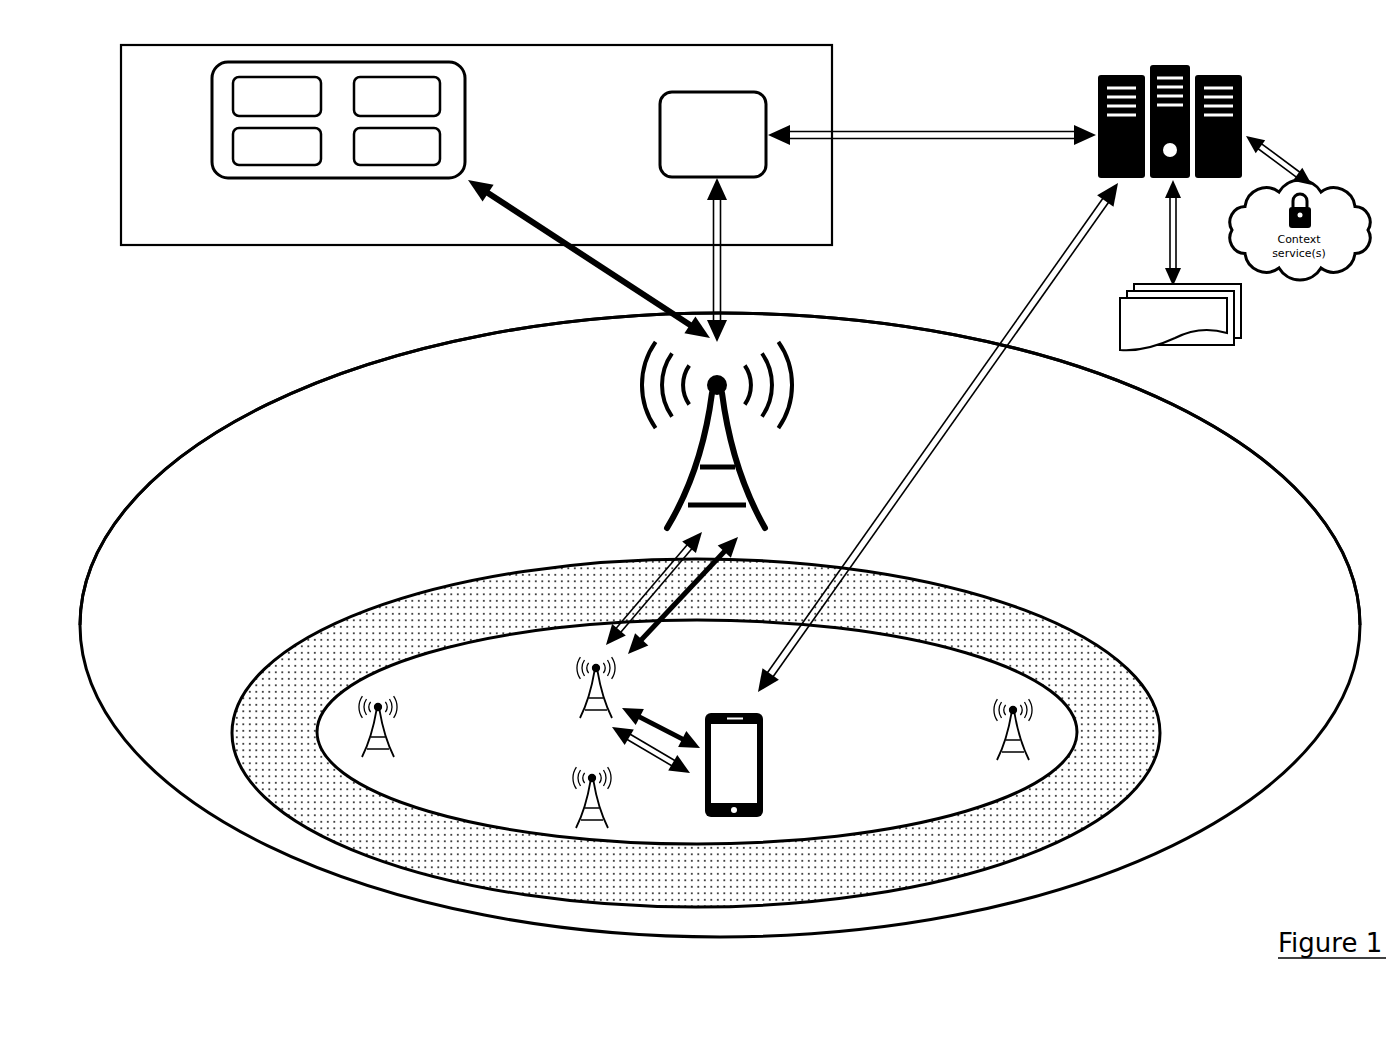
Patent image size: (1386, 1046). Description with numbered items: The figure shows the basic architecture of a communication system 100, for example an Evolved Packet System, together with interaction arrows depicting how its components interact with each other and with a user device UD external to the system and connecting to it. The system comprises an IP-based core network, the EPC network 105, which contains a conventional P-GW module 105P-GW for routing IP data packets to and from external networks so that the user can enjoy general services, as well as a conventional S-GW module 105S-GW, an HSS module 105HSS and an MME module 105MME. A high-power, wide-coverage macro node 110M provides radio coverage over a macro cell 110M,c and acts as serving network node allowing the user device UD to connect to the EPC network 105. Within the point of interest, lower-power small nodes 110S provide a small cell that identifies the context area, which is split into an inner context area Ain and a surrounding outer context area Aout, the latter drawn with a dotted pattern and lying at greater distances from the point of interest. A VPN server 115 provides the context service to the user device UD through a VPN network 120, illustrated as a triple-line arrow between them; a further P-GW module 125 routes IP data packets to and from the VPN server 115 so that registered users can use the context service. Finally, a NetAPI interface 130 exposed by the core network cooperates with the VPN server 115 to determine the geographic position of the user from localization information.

The communication system 100 is at (196, 860).
The EPC network 105 is at (290, 246).
The S-GW module 105S-GW is at (232, 92).
The P-GW module 105P-GW is at (440, 98).
The HSS module 105HSS is at (282, 165).
The MME module 105MME is at (395, 165).
The macro node 110M is at (745, 490).
The macro cell 110M,c is at (903, 323).
The small nodes 110S is at (393, 745).
The VPN server 115 is at (1098, 92).
The VPN network 120 is at (1068, 238).
The P-GW module 125 is at (716, 92).
The NetAPI interface 130 is at (1195, 345).
The user device UD is at (765, 735).
The outer context area Aout is at (985, 592).
The inner context area Ain is at (1062, 662).